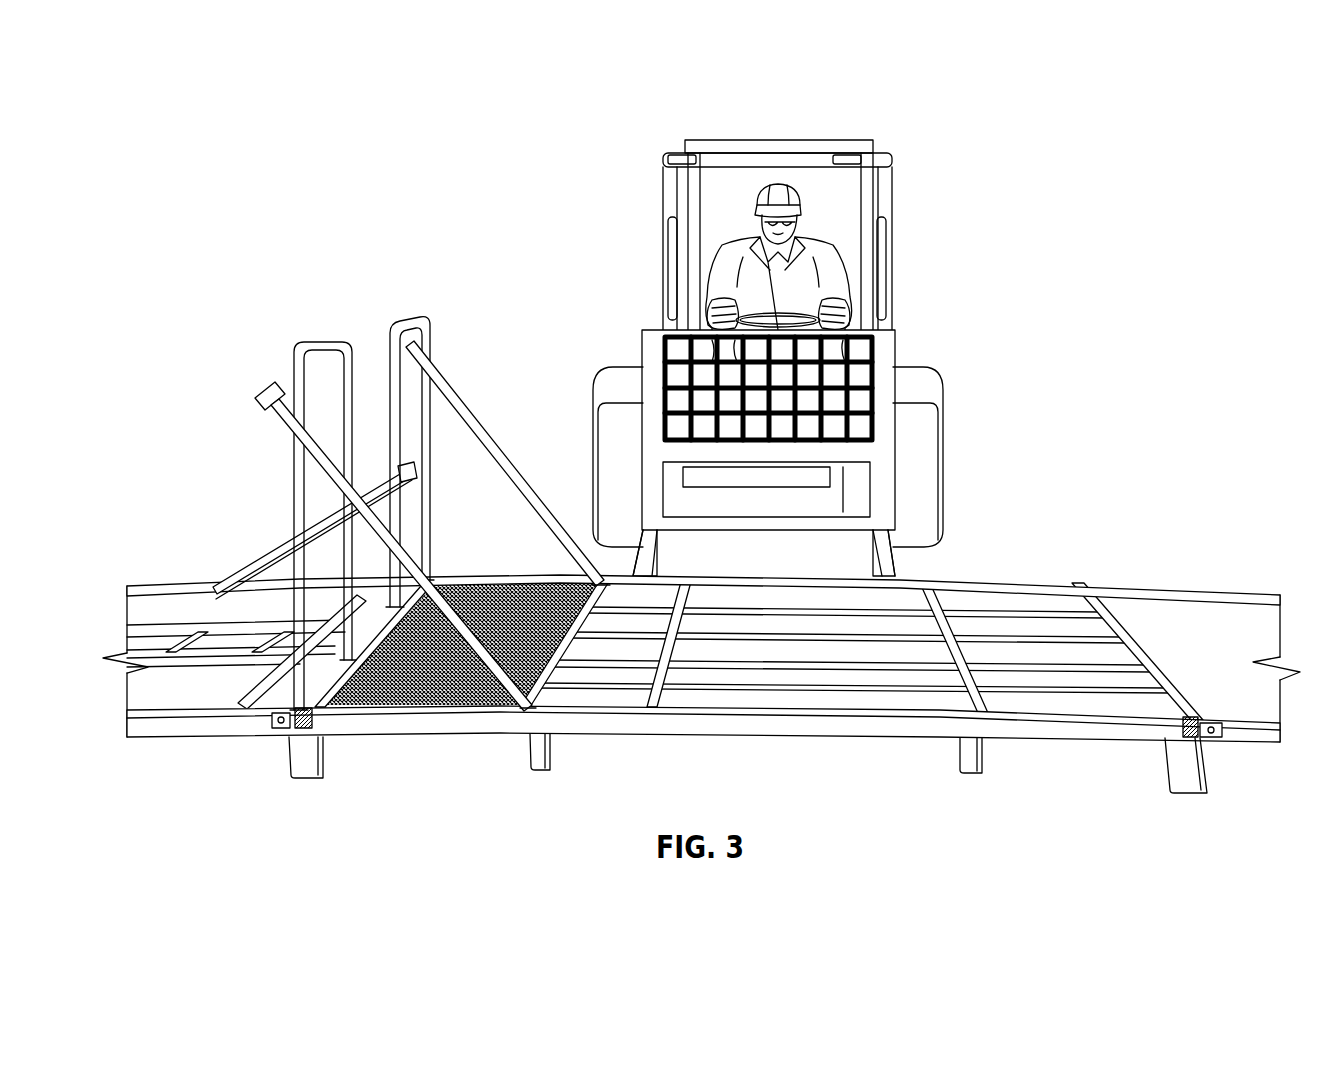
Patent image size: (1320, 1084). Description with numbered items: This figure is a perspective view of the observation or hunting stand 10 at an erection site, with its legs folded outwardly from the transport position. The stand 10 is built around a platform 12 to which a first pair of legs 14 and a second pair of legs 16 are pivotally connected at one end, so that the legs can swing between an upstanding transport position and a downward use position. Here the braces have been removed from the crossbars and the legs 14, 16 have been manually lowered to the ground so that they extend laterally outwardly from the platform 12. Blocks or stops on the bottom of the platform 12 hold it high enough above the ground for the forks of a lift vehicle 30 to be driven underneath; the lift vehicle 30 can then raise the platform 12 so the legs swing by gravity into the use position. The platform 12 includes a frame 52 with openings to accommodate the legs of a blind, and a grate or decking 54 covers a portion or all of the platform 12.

The observation or hunting stand 10 is at (701, 585).
The platform 12 is at (703, 688).
The first pair of legs 14 is at (185, 727).
The second pair of legs 16 is at (1250, 740).
The lift vehicle 30 is at (904, 273).
The frame 52 is at (745, 698).
The grate or decking 54 is at (416, 698).